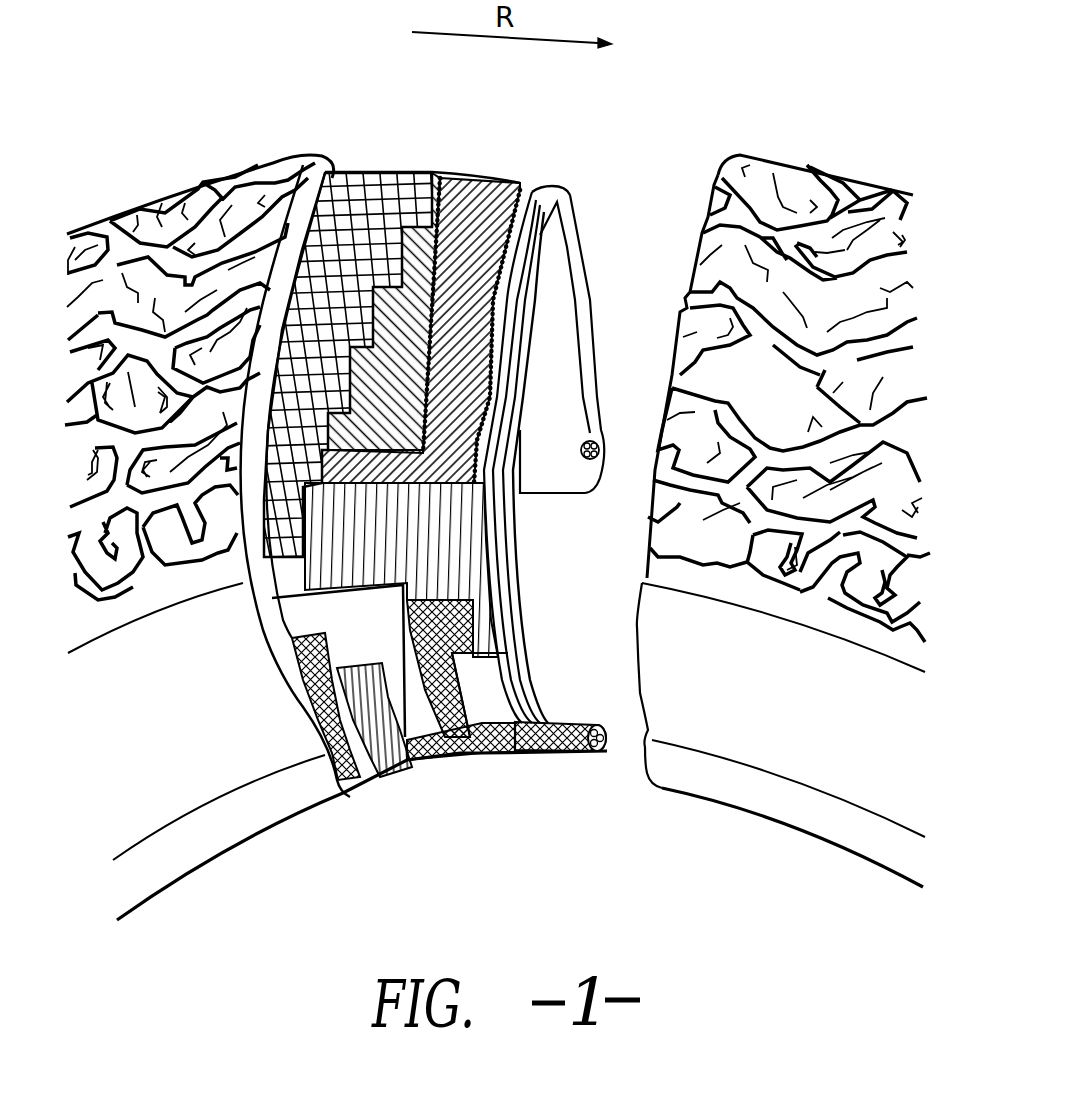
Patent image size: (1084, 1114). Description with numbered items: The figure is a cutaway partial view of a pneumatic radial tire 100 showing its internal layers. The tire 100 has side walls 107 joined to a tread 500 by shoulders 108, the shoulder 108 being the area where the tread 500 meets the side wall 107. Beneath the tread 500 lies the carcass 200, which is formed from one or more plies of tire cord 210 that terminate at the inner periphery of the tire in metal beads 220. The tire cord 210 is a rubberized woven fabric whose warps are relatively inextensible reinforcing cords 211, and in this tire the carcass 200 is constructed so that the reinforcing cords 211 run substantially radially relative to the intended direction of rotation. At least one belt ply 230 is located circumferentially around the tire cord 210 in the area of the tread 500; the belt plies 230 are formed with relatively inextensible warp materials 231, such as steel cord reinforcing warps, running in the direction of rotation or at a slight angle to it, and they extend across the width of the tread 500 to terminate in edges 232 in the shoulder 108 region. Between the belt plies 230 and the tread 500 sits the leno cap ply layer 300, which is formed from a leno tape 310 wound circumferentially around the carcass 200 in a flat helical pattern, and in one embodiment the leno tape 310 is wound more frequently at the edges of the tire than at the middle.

The tire 100 is at (290, 96).
The side wall 107 is at (208, 767).
The shoulder 108 is at (125, 610).
The carcass 200 is at (678, 128).
The tire cord 210 is at (530, 640).
The reinforcing cords 211 is at (518, 603).
The metal beads 220 is at (537, 757).
The belt ply 230 is at (495, 187).
The inextensible warp materials 231 is at (513, 233).
The edges 232 is at (520, 187).
The leno cap ply layer 300 is at (388, 173).
The leno tape 310 is at (453, 173).
The tread 500 is at (170, 195).